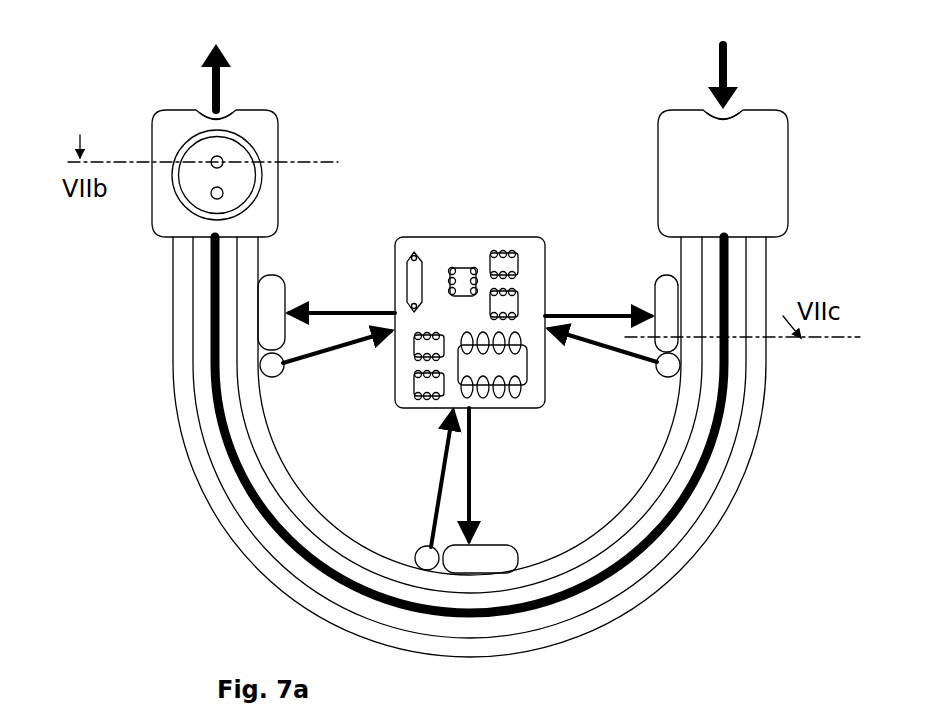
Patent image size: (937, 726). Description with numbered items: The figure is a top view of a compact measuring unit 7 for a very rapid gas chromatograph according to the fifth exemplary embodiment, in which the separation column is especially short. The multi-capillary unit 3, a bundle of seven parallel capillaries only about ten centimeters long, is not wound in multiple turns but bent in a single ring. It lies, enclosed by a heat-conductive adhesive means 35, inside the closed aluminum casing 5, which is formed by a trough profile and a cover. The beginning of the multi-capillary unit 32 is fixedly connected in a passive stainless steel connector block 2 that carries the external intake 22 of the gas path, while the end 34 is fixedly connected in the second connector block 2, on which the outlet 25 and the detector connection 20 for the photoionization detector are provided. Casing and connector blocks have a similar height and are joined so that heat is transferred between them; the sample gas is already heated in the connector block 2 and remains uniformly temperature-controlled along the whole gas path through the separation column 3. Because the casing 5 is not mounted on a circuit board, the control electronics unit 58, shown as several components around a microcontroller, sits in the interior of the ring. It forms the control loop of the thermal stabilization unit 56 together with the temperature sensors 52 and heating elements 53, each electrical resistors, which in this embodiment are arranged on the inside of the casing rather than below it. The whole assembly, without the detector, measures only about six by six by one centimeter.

The connector block 2 is at (270, 127).
The multi-capillary unit 3 is at (722, 432).
The casing 5 is at (603, 582).
The tube system 7 is at (197, 585).
The detector connection 20 is at (203, 177).
The intake 22 is at (723, 62).
The outlet 25 is at (215, 64).
The beginning of the multi-capillary unit 32 is at (730, 236).
The end of the multi-capillary unit 34 is at (210, 236).
The heat-conductive adhesive means 35 is at (663, 510).
The temperature sensor 52 is at (272, 367).
The heating element 53 is at (272, 312).
The thermal stabilization unit 56 is at (470, 287).
The control electronics unit 58 is at (430, 258).